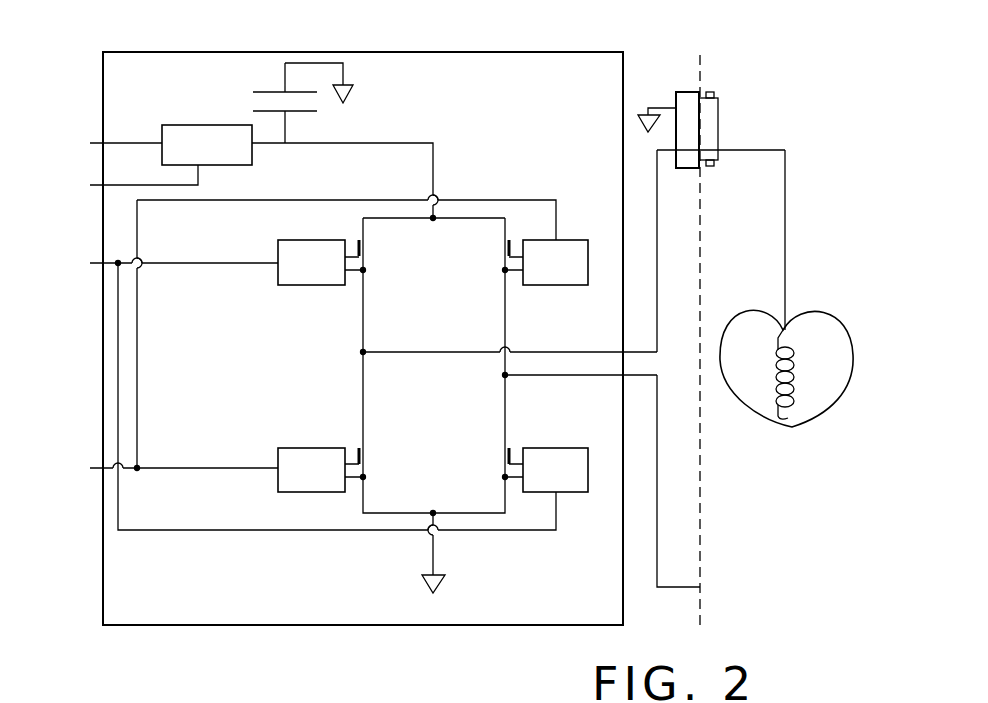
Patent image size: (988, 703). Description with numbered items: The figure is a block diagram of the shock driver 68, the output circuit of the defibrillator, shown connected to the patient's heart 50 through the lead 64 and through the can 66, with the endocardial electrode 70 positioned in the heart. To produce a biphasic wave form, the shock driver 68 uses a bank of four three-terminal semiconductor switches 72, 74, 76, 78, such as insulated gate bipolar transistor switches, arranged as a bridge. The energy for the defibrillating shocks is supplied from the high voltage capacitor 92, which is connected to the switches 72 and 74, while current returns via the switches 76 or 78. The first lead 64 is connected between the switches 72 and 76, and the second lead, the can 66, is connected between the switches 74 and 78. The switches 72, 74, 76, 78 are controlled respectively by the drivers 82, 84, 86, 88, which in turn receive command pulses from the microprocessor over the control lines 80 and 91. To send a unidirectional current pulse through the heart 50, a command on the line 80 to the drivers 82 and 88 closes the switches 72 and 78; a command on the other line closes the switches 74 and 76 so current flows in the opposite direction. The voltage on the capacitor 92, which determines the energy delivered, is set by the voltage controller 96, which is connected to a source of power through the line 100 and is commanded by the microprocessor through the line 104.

The heart 50 is at (833, 338).
The lead 64 is at (786, 237).
The can 66 is at (700, 460).
The shock driver 68 is at (487, 75).
The endocardial electrode 70 is at (796, 386).
The three-terminal semiconductor switch 72 is at (367, 246).
The three-terminal semiconductor switch 74 is at (503, 250).
The three-terminal semiconductor switch 76 is at (365, 457).
The three-terminal semiconductor switch 78 is at (500, 457).
The control line 80 is at (90, 263).
The driver 82 is at (278, 258).
The driver 84 is at (574, 240).
The driver 86 is at (278, 480).
The driver 88 is at (548, 448).
The control line 91 is at (97, 468).
The high voltage capacitor 92 is at (328, 110).
The voltage controller 96 is at (198, 120).
The line 100 is at (117, 143).
The line 104 is at (103, 185).